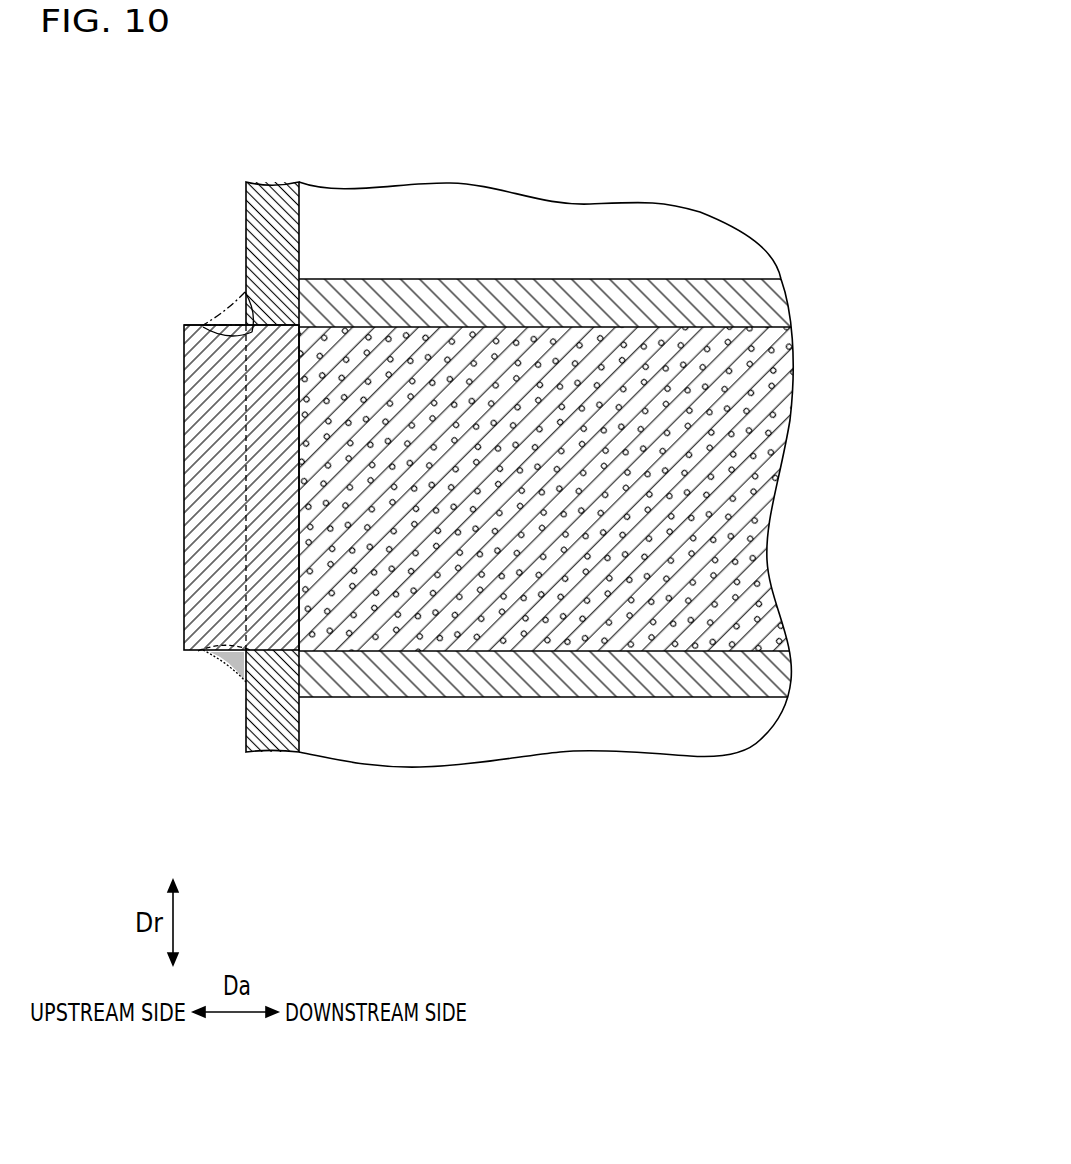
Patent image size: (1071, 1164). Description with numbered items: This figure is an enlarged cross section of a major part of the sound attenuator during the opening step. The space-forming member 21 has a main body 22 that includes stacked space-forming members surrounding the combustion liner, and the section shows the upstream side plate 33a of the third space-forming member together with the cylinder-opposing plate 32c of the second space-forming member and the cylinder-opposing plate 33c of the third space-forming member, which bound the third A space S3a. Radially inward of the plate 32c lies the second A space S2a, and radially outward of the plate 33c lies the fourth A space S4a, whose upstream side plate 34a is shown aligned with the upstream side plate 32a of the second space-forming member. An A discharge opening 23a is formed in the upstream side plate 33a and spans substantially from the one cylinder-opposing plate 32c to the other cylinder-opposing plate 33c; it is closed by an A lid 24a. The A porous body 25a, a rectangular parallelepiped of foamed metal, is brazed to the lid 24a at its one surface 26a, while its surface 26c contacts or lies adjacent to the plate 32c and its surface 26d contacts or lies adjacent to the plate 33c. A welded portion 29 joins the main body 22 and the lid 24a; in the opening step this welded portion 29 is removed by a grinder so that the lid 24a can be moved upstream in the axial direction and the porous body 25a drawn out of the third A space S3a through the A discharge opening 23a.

The space-forming member 21 is at (207, 458).
The main body 22 is at (207, 458).
The upstream side plate 34a is at (265, 230).
The upstream side plate 32a is at (245, 730).
The cylinder-opposing plate 33c is at (585, 293).
The cylinder-opposing plate 32c is at (597, 697).
The other surface of the A porous body 26d is at (485, 327).
The one surface of the A porous body 26c is at (450, 652).
The one surface of the A porous body 26a is at (298, 448).
The A porous body 25a is at (770, 416).
The A lid 24a is at (177, 487).
The A discharge opening 23a is at (260, 340).
The upstream side plate 33a is at (245, 545).
The welded portion 29 is at (230, 312).
The fourth A space S4a is at (730, 250).
The third A space S3a is at (752, 502).
The second A space S2a is at (738, 730).